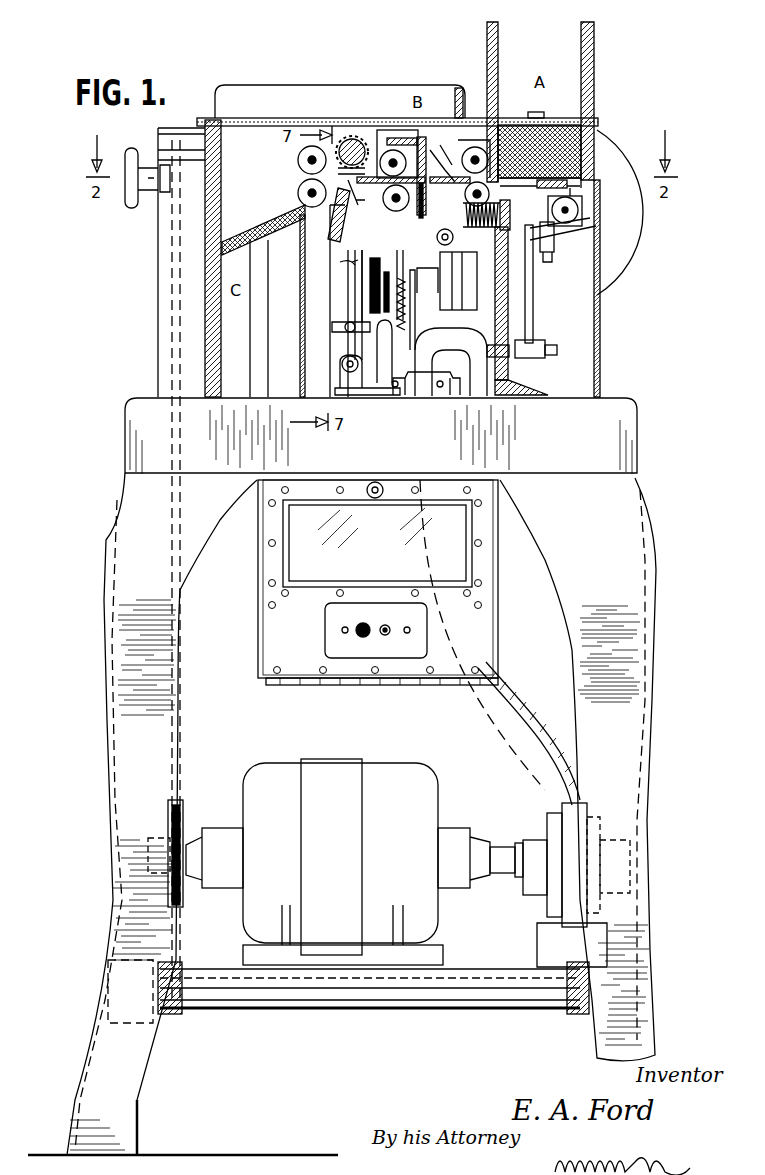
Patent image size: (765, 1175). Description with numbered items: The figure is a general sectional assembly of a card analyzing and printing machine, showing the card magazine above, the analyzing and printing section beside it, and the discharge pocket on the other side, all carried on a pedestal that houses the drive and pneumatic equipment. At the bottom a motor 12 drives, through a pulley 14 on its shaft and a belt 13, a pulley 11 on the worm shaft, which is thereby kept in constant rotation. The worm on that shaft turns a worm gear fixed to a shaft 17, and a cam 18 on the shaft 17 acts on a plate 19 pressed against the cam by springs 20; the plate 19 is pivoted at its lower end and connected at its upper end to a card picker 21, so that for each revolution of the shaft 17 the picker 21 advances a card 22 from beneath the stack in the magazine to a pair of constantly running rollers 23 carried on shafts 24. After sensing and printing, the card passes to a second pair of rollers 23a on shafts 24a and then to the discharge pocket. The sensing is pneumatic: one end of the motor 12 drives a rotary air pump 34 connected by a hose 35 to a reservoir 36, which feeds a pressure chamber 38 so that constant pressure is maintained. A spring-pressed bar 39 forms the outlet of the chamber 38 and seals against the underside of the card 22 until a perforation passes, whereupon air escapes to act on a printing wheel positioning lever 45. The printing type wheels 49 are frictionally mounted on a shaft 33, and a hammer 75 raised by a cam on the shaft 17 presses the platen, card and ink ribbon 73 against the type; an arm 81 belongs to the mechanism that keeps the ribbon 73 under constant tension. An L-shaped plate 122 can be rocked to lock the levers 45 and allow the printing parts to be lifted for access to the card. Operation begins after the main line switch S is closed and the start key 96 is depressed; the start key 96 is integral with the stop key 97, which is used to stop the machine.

The pulley 11 is at (168, 210).
The motor 12 is at (323, 778).
The belt 13 is at (175, 540).
The pulley 14 is at (182, 808).
The shaft 17 is at (552, 226).
The cam 18 is at (598, 218).
The plate 19 is at (531, 300).
The springs 20 is at (600, 252).
The card picker 21 is at (578, 192).
The card 22 is at (590, 131).
The rollers 23 is at (477, 148).
The rollers 23a is at (308, 160).
The shafts 24 is at (508, 126).
The shafts 24a is at (308, 193).
The shaft 33 is at (362, 130).
The air pump 34 is at (566, 888).
The hose 35 is at (508, 700).
The reservoir 36 is at (435, 293).
The pressure chamber 38 is at (372, 282).
The bar 39 is at (392, 180).
The printing wheel positioning lever 45 is at (384, 132).
The printing type wheels 49 is at (348, 136).
The ink ribbon 73 is at (348, 262).
The hammer 75 is at (340, 218).
The arm 81 is at (493, 300).
The start key 96 is at (440, 396).
The stop key 97 is at (394, 396).
The L-shaped plate 122 is at (438, 128).
The main line switch S is at (378, 636).